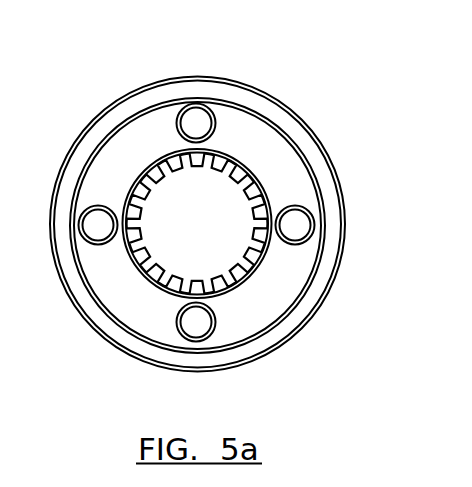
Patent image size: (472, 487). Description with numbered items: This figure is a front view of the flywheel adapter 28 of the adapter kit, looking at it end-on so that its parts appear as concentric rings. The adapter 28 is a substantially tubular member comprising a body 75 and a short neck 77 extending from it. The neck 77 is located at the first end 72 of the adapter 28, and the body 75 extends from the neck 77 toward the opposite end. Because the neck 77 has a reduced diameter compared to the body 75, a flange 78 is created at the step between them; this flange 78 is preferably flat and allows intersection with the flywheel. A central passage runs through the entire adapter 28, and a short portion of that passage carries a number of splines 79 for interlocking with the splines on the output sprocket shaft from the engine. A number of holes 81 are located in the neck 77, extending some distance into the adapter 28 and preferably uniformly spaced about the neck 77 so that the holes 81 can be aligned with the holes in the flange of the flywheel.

The flywheel adapter 28 is at (333, 108).
The first end 72 is at (297, 290).
The body 75 is at (132, 93).
The neck 77 is at (228, 98).
The flange 78 is at (323, 192).
The splines 79 is at (142, 262).
The holes 81 is at (202, 330).